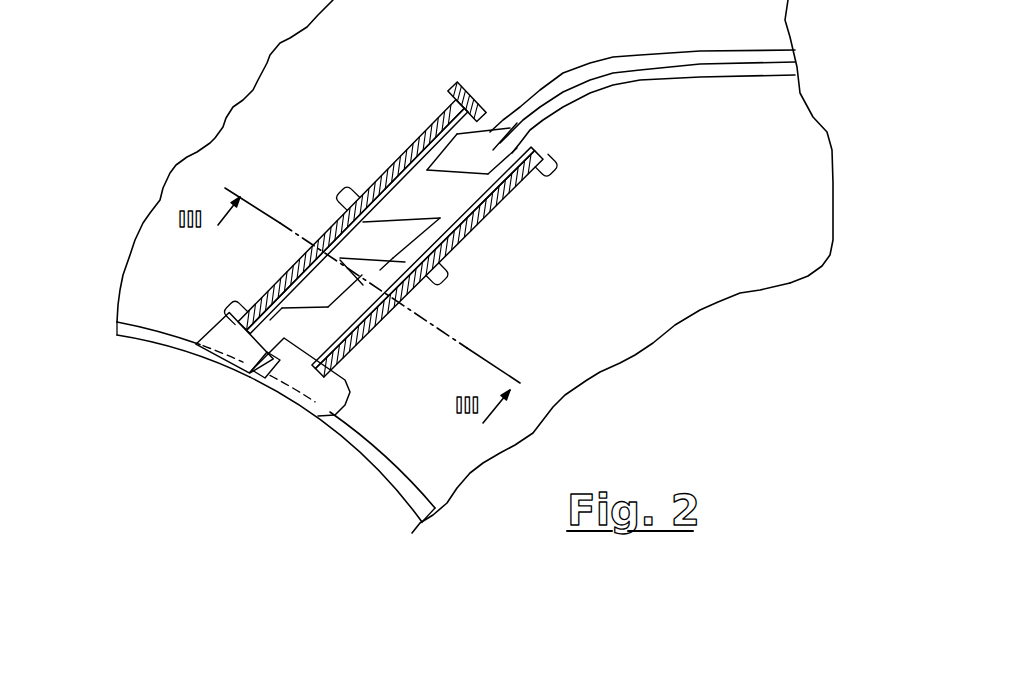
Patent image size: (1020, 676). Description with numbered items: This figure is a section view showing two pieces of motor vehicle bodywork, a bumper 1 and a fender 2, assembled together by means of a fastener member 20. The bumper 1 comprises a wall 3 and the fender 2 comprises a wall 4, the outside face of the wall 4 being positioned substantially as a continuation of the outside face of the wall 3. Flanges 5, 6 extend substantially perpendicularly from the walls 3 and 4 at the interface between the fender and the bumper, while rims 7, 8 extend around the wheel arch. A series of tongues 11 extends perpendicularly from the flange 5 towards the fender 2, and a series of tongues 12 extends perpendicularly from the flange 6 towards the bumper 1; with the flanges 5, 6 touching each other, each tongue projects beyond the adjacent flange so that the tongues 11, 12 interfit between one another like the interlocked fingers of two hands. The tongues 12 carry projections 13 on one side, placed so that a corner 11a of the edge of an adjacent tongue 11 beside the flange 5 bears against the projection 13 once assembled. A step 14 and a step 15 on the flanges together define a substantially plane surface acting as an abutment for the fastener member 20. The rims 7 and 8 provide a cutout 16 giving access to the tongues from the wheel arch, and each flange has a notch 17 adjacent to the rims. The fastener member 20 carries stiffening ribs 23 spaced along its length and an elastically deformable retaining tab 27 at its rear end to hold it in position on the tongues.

The bumper 1 is at (668, 372).
The fender 2 is at (197, 115).
The wall 3 is at (663, 292).
The wall 4 is at (158, 243).
The flange 5 is at (783, 67).
The flange 6 is at (780, 55).
The rim 7 is at (405, 490).
The rim 8 is at (137, 332).
The tongues 11 is at (450, 150).
The corner 11a is at (423, 213).
The tongues 12 is at (457, 195).
The projections 13 is at (450, 233).
The step 14 is at (510, 130).
The step 15 is at (493, 140).
The cutout 16 is at (303, 415).
The notch 17 is at (250, 388).
The fastener member 20 is at (523, 180).
The stiffening ribs 23 is at (543, 172).
The retaining tab 27 is at (227, 340).